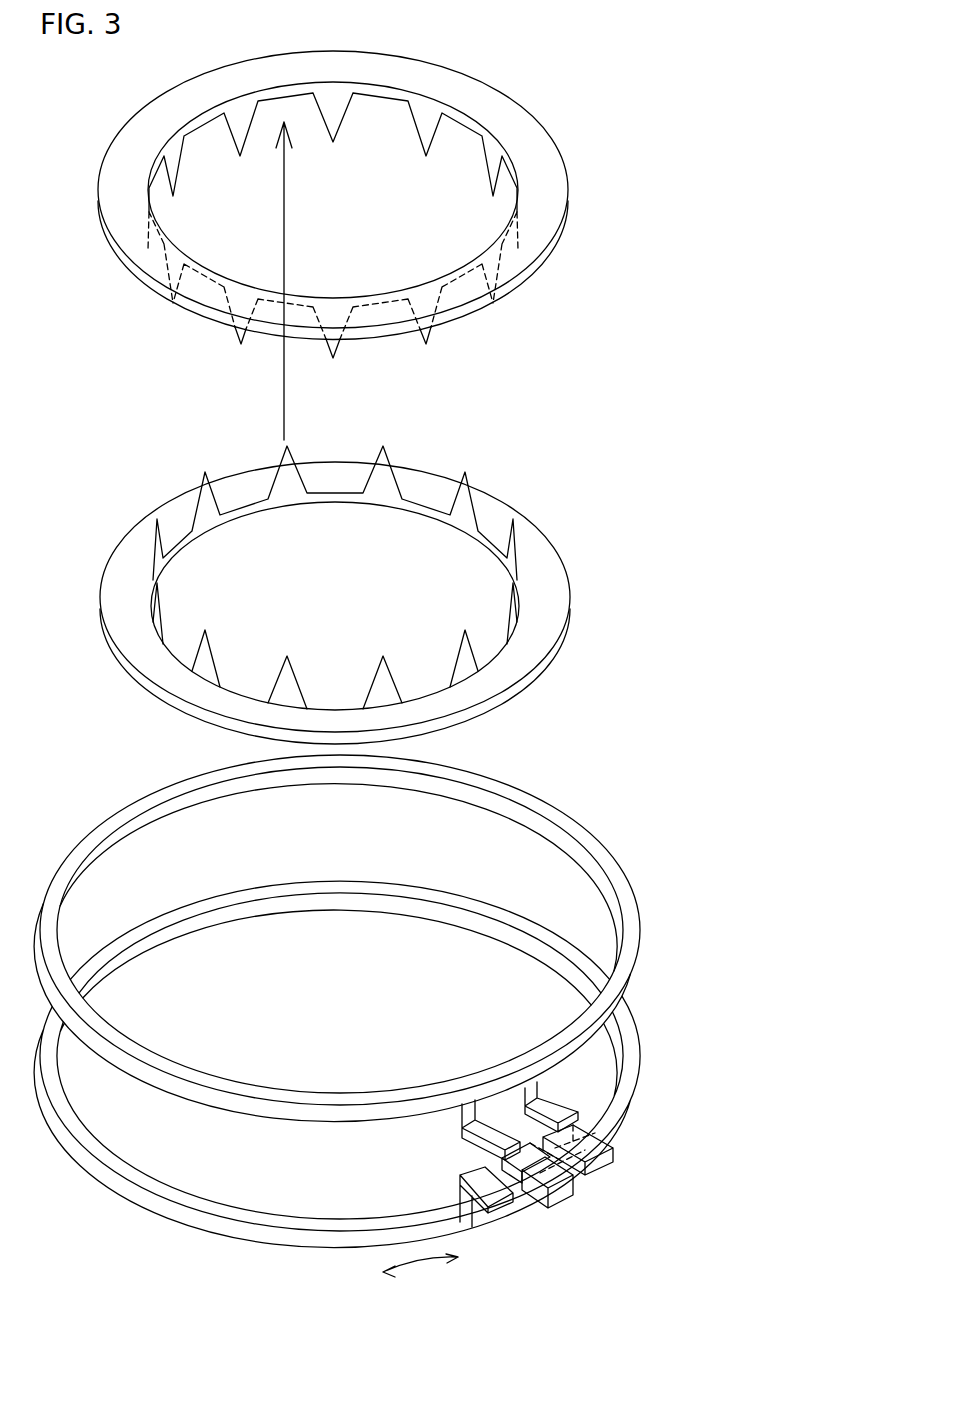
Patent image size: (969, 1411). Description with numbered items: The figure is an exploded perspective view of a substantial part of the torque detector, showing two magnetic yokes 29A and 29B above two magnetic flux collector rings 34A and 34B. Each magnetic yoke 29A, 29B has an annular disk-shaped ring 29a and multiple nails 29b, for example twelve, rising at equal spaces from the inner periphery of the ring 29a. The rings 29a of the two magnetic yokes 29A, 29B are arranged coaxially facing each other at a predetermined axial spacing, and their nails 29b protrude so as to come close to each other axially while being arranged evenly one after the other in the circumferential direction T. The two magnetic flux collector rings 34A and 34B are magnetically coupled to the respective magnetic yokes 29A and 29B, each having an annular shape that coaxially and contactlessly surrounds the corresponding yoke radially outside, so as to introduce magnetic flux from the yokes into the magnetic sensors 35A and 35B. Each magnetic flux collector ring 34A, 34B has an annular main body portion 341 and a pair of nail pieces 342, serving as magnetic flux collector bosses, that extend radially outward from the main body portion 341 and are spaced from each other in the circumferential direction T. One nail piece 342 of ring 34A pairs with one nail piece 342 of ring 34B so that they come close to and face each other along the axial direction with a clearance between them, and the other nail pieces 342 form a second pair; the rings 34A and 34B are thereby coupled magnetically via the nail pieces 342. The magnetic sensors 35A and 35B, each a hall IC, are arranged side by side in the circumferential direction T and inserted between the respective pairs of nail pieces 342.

The magnetic yoke 29A is at (549, 158).
The magnetic yoke 29B is at (551, 566).
The ring 29a is at (543, 211).
The nails 29b is at (330, 148).
The magnetic flux collector ring 34A is at (628, 866).
The magnetic flux collector ring 34B is at (637, 1040).
The main body portion 341 is at (560, 802).
The nail pieces 342 is at (556, 1103).
The magnetic sensor 35A is at (605, 1172).
The magnetic sensor 35B is at (555, 1200).
The circumferential direction T is at (414, 1266).